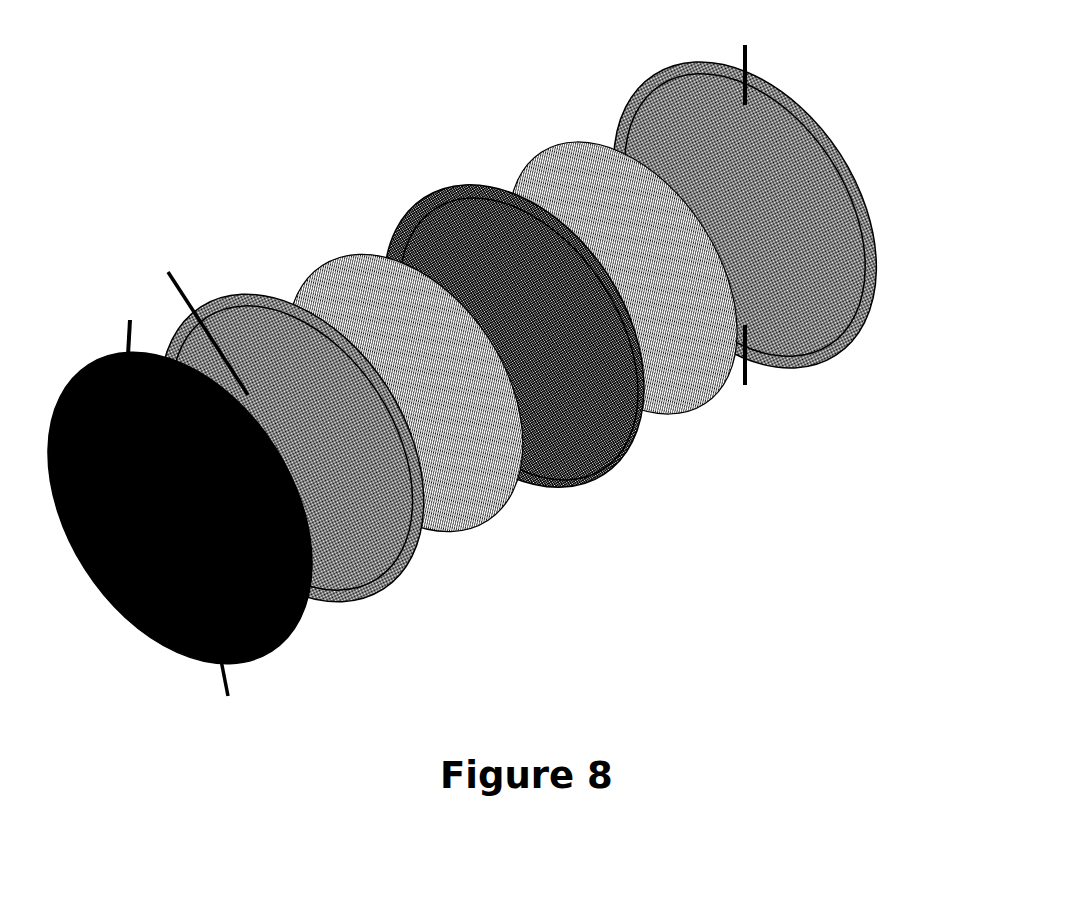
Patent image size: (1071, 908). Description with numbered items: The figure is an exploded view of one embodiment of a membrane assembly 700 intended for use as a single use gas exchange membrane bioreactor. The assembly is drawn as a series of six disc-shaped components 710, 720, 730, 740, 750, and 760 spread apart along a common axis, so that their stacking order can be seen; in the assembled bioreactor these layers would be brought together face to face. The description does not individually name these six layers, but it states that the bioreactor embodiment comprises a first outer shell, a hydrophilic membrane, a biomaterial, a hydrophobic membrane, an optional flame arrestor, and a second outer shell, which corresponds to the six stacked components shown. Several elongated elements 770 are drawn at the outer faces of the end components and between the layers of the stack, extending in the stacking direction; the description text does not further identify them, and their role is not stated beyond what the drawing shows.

The membrane assembly 700 is at (276, 144).
The first disc (opaque lens) 710 is at (160, 622).
The second disc with rim 720 is at (360, 563).
The third disc (light) 730 is at (465, 515).
The fourth disc with rim 740 is at (577, 473).
The fifth disc (hatched) 750 is at (677, 402).
The sixth disc with rim 760 is at (838, 348).
The alignment pins 770 is at (752, 58).